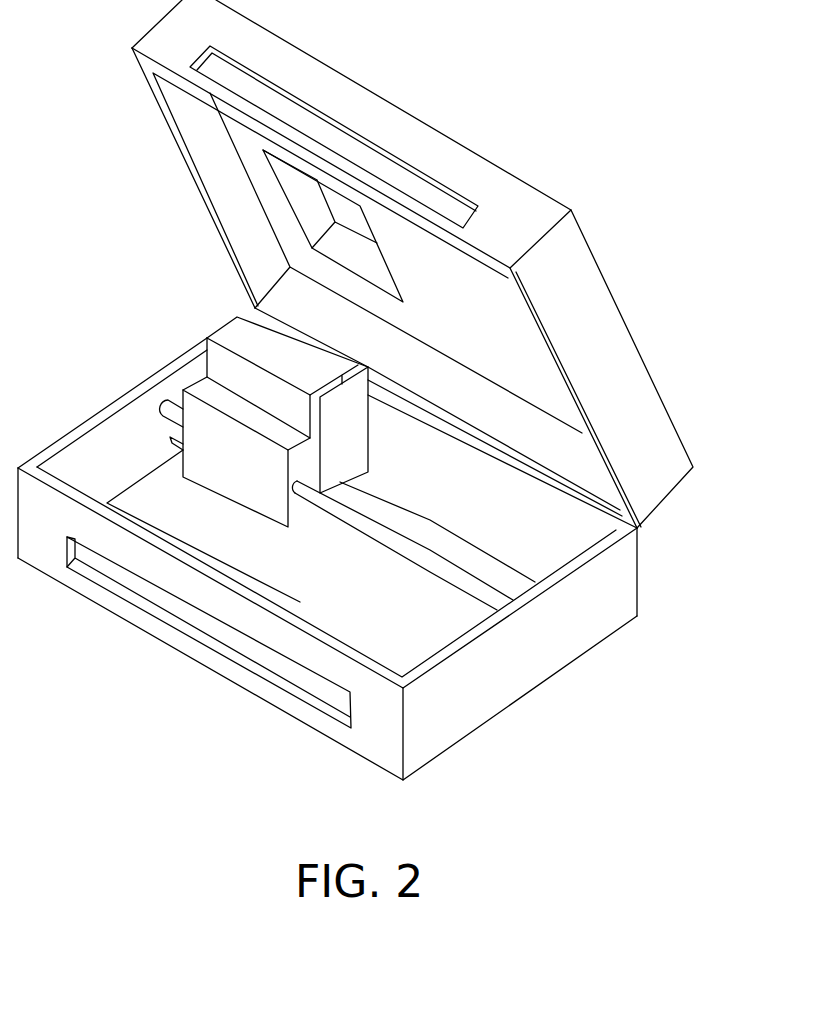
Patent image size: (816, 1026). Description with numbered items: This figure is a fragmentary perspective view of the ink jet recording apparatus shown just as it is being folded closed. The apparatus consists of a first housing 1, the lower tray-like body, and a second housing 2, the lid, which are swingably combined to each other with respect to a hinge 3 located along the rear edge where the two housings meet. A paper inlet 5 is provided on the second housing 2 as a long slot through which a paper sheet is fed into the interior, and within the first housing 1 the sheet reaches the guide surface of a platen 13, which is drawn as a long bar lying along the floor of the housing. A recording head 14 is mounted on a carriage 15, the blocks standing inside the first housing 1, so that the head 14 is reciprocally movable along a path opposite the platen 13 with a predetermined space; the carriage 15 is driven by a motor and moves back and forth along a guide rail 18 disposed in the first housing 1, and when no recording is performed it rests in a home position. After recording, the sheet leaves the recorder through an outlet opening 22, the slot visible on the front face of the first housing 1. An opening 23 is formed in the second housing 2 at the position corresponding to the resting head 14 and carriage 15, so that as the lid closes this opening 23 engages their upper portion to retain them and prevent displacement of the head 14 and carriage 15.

The first housing 1 is at (136, 640).
The second housing 2 is at (170, 22).
The hinge 3 is at (495, 448).
The paper inlet 5 is at (378, 158).
The platen 13 is at (500, 577).
The recording head 14 is at (282, 327).
The carriage 15 is at (222, 360).
The guide rail 18 is at (160, 405).
The outlet opening 22 is at (289, 675).
The opening 23 is at (303, 193).